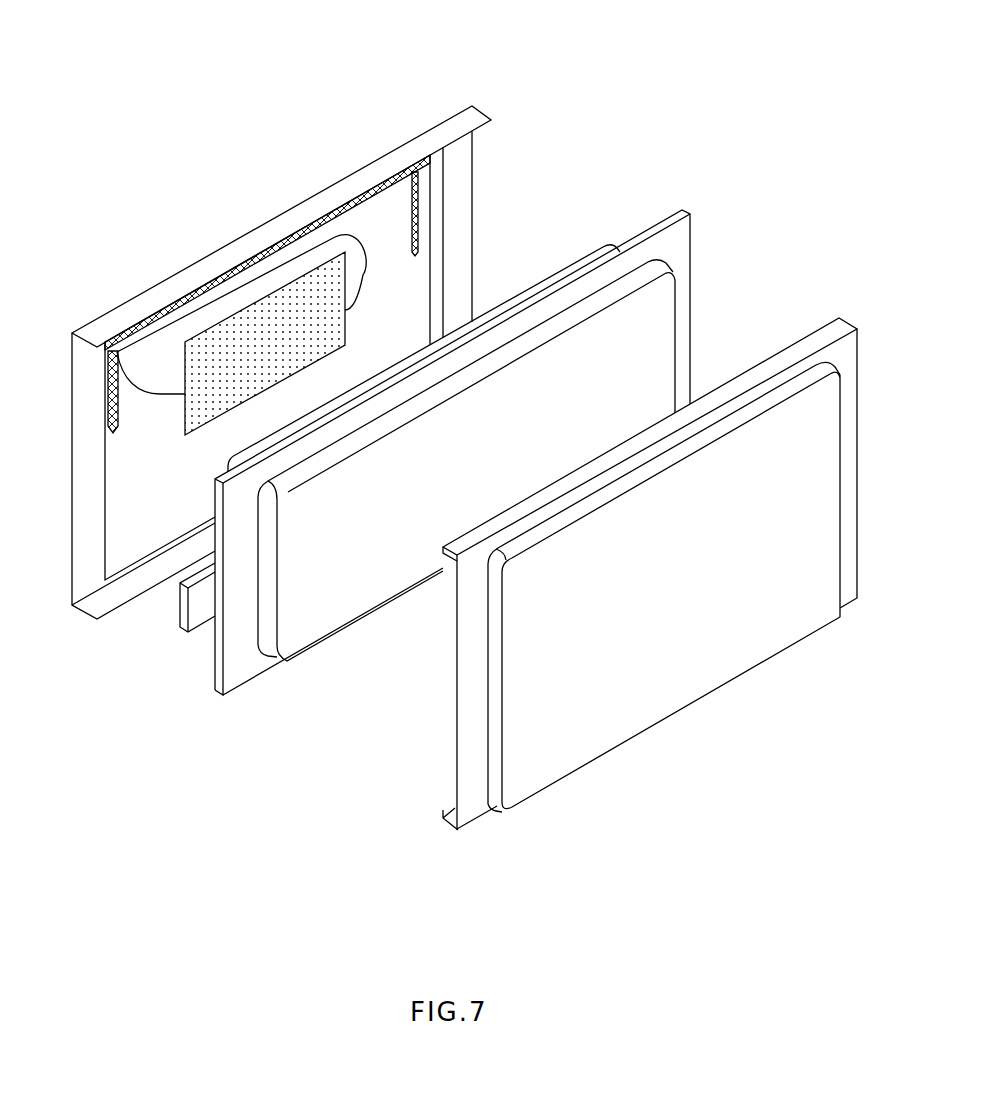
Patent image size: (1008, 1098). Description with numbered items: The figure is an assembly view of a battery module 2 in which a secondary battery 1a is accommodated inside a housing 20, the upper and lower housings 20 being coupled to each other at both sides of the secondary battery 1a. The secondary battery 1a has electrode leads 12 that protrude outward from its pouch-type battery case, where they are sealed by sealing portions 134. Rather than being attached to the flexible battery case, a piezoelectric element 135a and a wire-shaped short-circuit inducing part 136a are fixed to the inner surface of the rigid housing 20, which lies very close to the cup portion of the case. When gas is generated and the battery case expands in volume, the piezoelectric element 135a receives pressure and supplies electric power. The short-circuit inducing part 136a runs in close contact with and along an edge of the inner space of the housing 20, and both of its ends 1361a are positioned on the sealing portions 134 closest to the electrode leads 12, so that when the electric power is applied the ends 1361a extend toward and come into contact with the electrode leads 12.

The battery module 2 is at (613, 70).
The housing 20 is at (450, 803).
The secondary battery 1a is at (657, 222).
The electrode lead 12 is at (198, 608).
The sealing portion 134 is at (243, 668).
The piezoelectric element 135a is at (343, 310).
The short-circuit inducing part 136a is at (258, 248).
The ends of the short-circuit inducing part 1361a is at (103, 382).